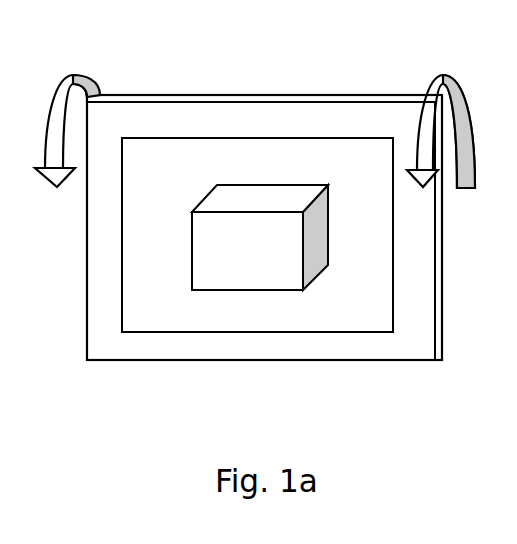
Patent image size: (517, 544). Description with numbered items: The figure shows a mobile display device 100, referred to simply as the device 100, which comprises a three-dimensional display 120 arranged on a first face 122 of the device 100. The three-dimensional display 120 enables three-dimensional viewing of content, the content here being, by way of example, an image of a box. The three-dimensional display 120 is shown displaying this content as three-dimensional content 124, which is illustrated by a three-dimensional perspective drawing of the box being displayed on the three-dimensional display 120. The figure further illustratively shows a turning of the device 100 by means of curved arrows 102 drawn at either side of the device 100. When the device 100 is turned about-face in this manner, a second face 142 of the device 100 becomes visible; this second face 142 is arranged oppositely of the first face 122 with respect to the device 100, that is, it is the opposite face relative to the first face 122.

The mobile display device 100 is at (139, 76).
The curved arrows 102 is at (62, 202).
The 3D display 120 is at (345, 332).
The first face 122 is at (252, 122).
The 3D content 124 is at (245, 297).
The second face 142 is at (300, 95).